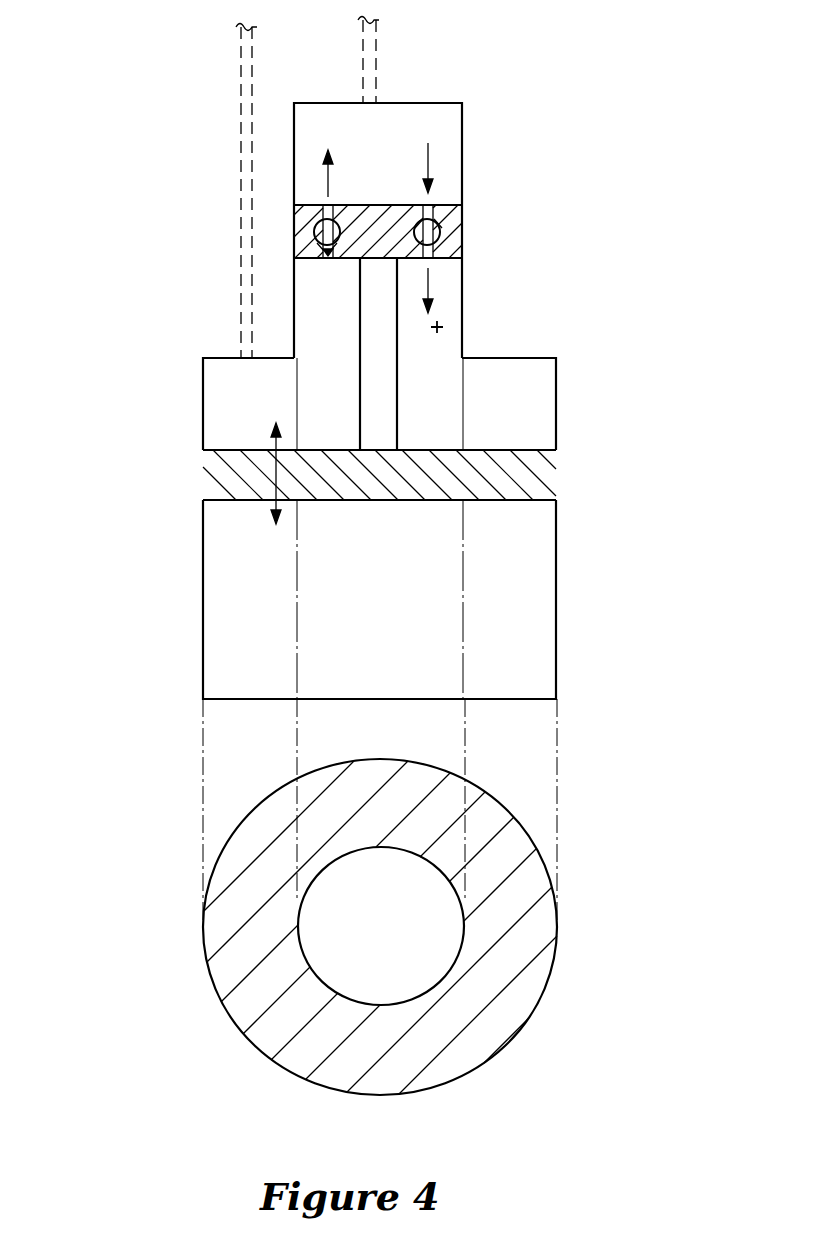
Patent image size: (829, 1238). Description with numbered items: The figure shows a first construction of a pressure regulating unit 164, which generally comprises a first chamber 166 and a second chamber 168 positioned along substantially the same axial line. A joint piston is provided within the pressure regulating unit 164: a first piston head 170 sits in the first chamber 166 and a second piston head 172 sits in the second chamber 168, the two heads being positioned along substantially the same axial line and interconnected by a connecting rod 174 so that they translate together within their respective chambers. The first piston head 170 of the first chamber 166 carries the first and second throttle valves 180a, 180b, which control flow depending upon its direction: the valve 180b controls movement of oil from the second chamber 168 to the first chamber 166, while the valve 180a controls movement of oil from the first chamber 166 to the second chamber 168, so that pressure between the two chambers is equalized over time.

The pressure regulating unit 164 is at (190, 677).
The first chamber 166 is at (425, 117).
The second chamber 168 is at (273, 410).
The first piston head 170 is at (343, 260).
The second piston head 172 is at (228, 511).
The connecting rod 174 is at (397, 410).
The first throttle valve 180a is at (462, 249).
The second throttle valve 180b is at (315, 235).